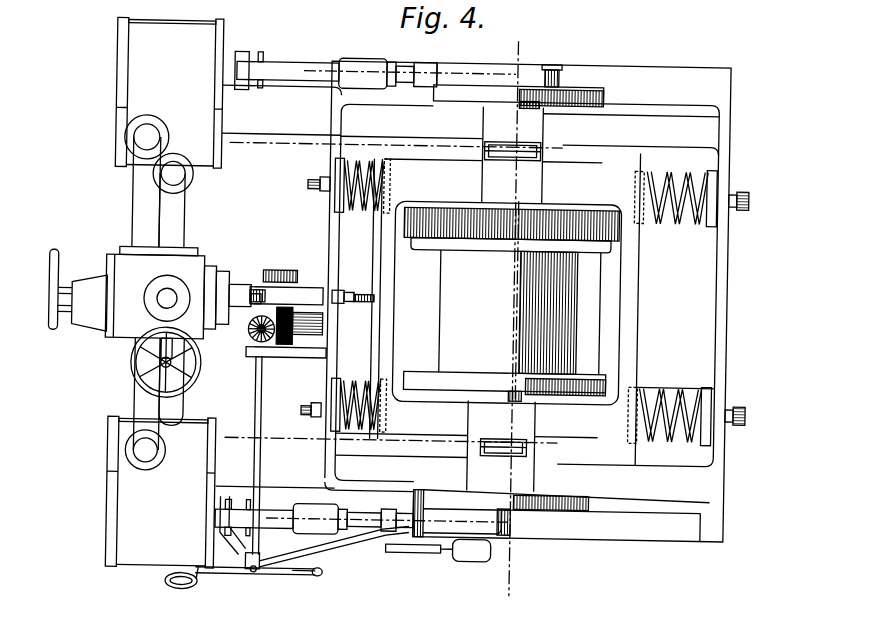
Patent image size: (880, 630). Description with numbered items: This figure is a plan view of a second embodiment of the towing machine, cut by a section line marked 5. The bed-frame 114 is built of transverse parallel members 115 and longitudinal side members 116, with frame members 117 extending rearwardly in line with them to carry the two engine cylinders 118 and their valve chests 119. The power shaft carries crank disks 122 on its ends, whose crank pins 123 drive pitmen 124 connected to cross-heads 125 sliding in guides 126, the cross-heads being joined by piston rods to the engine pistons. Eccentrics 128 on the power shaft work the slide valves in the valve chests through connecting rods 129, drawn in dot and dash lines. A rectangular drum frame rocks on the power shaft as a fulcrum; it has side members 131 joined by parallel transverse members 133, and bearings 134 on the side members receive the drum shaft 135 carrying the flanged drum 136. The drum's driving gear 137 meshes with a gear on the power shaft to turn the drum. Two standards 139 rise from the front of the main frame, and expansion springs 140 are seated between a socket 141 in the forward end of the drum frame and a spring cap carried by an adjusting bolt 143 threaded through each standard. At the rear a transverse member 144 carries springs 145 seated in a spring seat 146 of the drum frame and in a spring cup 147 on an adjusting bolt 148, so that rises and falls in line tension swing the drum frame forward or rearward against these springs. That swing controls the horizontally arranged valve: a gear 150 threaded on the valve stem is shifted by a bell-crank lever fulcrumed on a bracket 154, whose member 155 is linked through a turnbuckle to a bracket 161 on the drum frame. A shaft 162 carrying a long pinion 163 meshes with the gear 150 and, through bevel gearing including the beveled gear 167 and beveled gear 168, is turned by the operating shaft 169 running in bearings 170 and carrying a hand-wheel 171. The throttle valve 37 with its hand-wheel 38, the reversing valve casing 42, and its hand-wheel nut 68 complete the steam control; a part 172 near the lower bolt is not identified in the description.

The section line 5- 5 is at (512, 48).
The throttle valve 37 is at (165, 385).
The hand-wheel 38 is at (135, 390).
The casing 42 is at (183, 293).
The hand-wheel nut 68 is at (50, 328).
The bed-frame 114 is at (703, 545).
The transverse parallel members 115 is at (722, 284).
The longitudinal side members 116 is at (685, 62).
The frame members 117 is at (240, 116).
The engine cylinders 118 is at (150, 42).
The valve chests 119 is at (210, 170).
The crank disks 122 is at (586, 108).
The crank pins 123 is at (560, 78).
The pitmen 124 is at (487, 82).
The cross-heads 125 is at (362, 72).
The guides 126 is at (335, 65).
The eccentrics 128 is at (540, 152).
The connecting rods 129 is at (428, 135).
The side members 131 is at (600, 172).
The transverse members 133 is at (373, 258).
The bearings 134 is at (492, 180).
The drum shaft 135 is at (503, 380).
The flanged drum 136 is at (457, 327).
The driving gear 137 is at (425, 254).
The standards 139 is at (722, 166).
The expansion springs 140 is at (676, 222).
The socket 141 is at (636, 190).
The adjusting bolt 143 is at (743, 204).
The transverse member 144 is at (342, 230).
The springs 145 is at (372, 250).
The spring seat 146 is at (388, 183).
The spring cup 147 is at (335, 165).
The adjusting bolt 148 is at (310, 194).
The gear 150 is at (277, 274).
The bracket 154 is at (308, 290).
The bell-crank lever member 155 is at (262, 276).
The bracket 161 is at (338, 356).
The shaft 162 is at (262, 370).
The large pinion 163 is at (260, 362).
The beveled gear 167 is at (150, 347).
The beveled gear 168 is at (302, 320).
The operating shaft 169 is at (257, 476).
The bearings 170 is at (252, 582).
The hand-wheel 171 is at (318, 582).
The plate 172 is at (710, 398).